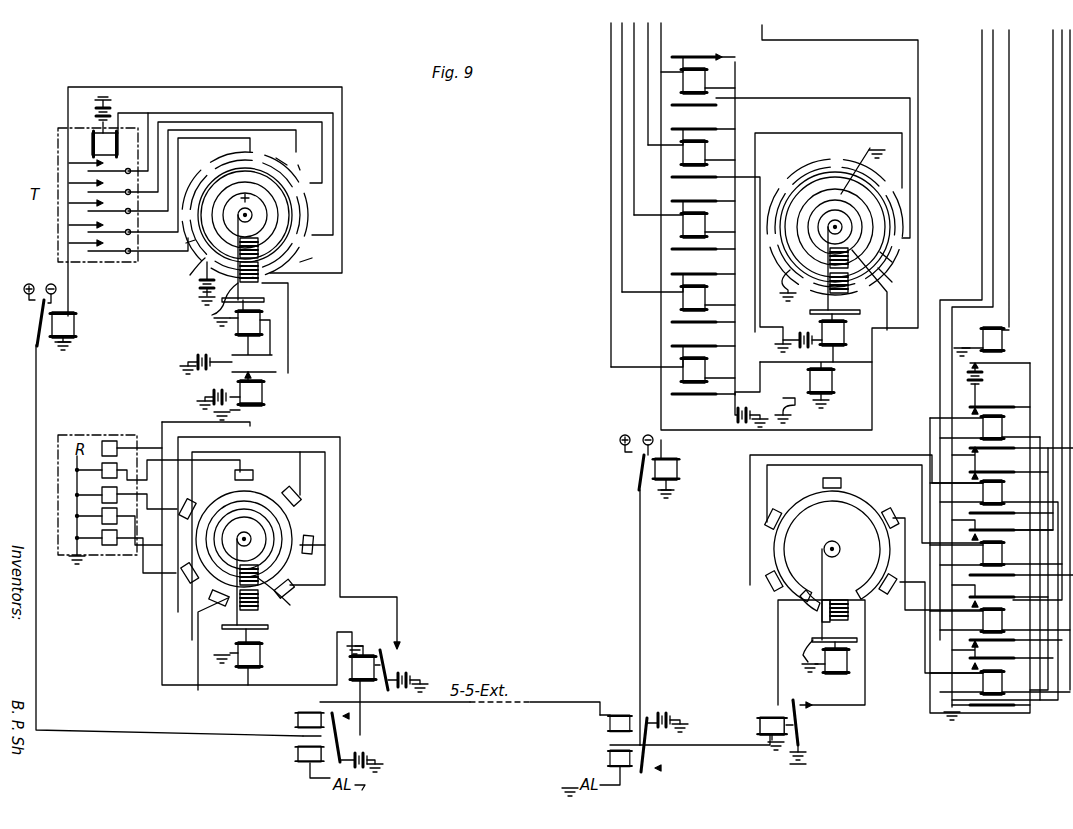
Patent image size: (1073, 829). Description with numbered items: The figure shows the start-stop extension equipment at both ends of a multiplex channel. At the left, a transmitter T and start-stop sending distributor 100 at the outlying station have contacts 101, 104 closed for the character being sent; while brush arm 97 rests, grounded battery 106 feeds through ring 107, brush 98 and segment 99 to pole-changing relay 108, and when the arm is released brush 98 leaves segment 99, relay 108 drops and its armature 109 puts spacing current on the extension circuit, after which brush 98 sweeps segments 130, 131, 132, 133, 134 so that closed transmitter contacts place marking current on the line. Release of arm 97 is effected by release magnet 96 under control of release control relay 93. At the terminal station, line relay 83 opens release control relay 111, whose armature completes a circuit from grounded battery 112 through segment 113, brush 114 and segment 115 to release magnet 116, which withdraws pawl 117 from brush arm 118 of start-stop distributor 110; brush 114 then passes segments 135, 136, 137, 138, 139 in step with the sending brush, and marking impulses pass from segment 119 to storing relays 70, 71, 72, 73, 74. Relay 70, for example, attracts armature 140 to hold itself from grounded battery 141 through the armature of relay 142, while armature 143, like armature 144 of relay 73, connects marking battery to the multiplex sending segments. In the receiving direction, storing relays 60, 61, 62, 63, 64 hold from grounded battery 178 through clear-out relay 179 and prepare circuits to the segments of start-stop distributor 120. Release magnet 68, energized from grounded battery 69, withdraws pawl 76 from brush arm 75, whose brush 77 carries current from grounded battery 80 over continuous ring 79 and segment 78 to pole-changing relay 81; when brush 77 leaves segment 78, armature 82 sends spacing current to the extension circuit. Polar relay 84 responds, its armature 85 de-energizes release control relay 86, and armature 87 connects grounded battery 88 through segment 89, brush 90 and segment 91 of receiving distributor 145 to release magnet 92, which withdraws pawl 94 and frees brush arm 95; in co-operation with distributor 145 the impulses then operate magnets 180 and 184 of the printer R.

The start-stop sending distributor 100 is at (205, 188).
The contacts 101 is at (100, 227).
The contacts 104 is at (100, 177).
The grounded battery 106 is at (200, 293).
The distributor ring 107 is at (180, 271).
The pole-changing relay 108 is at (76, 323).
The armature 109 is at (40, 318).
The segment 130 is at (172, 245).
The segment 131 is at (200, 165).
The segment 132 is at (294, 150).
The segment 133 is at (313, 161).
The segment 134 is at (320, 267).
The release magnet 96 is at (255, 318).
The distributor brush arm 97 is at (212, 316).
The brush 98 is at (258, 270).
The segment 99 is at (258, 248).
The release control relay 93 is at (262, 408).
The magnet 184 is at (102, 470).
The magnet 180 is at (108, 548).
The start-stop receiving distributor 145 is at (281, 553).
The segment 89 is at (258, 590).
The brush 90 is at (258, 600).
The segment 91 is at (290, 606).
The release magnet 92 is at (258, 660).
The pawl 94 is at (222, 635).
The brush arm 95 is at (240, 585).
The polar relay 84 is at (298, 754).
The armature 85 is at (370, 756).
The release control relay 86 is at (372, 683).
The armature 87 is at (388, 668).
The grounded battery 88 is at (413, 677).
The polar relay 83 is at (610, 758).
The pole-changing relay 81 is at (680, 468).
The armature 82 is at (636, 470).
The storing relay 60 is at (685, 369).
The storing relay 61 is at (685, 296).
The storing relay 62 is at (685, 224).
The storing relay 63 is at (685, 152).
The storing relay 64 is at (685, 82).
The start-stop distributor 120 is at (857, 232).
The grounded battery 80 is at (780, 285).
The continuous ring 79 is at (898, 262).
The segment 78 is at (897, 279).
The brush 77 is at (848, 285).
The pawl 76 is at (850, 316).
The brush arm 75 is at (806, 333).
The grounded battery 69 is at (783, 335).
The release magnet 68 is at (842, 340).
The clear-out relay 179 is at (832, 382).
The grounded battery 178 is at (793, 414).
The start-stop distributor 110 is at (841, 520).
The segment 119 is at (782, 548).
The segment 137 is at (822, 483).
The segment 138 is at (890, 507).
The segment 139 is at (895, 576).
The segment 136 is at (775, 523).
The segment 135 is at (775, 588).
The segment 113 is at (838, 600).
The brush 114 is at (835, 622).
The segment 115 is at (801, 609).
The distributor brush arm 118 is at (812, 640).
The pawl 117 is at (808, 657).
The release magnet 116 is at (840, 680).
The release control relay 111 is at (758, 720).
The grounded battery 112 is at (808, 752).
The relay 142 is at (1002, 344).
The grounded battery 141 is at (988, 385).
The armature 140 is at (988, 407).
The storing relay 70 is at (1002, 424).
The storing relay 71 is at (1002, 489).
The storing relay 72 is at (1002, 550).
The storing relay 73 is at (1002, 616).
The storing relay 74 is at (1002, 678).
The armature 143 is at (990, 458).
The armature 144 is at (990, 644).